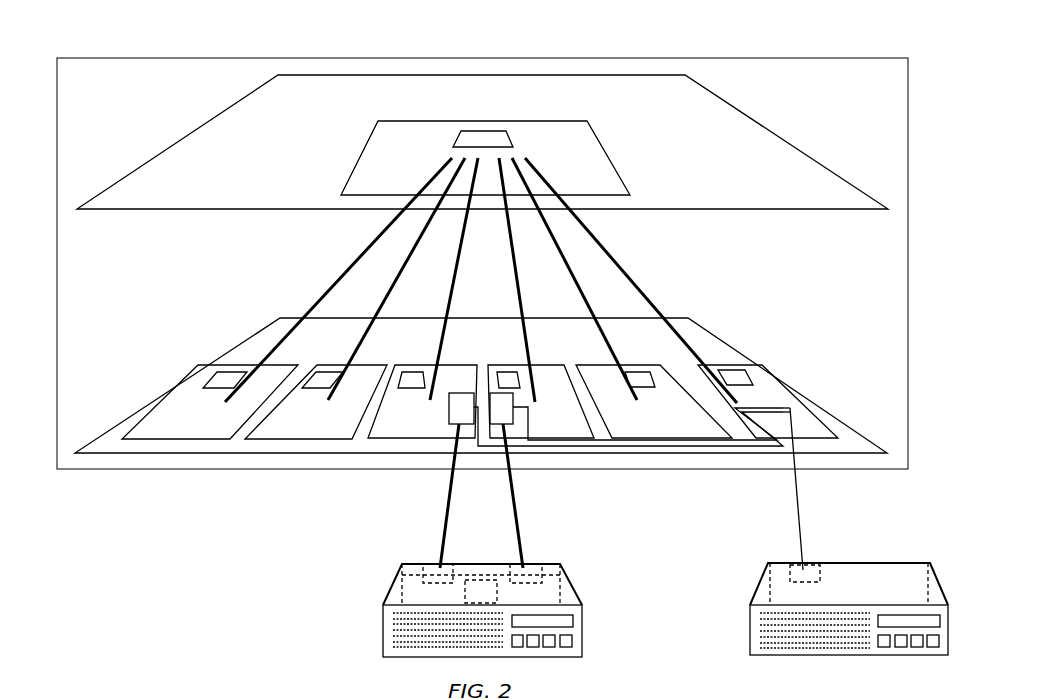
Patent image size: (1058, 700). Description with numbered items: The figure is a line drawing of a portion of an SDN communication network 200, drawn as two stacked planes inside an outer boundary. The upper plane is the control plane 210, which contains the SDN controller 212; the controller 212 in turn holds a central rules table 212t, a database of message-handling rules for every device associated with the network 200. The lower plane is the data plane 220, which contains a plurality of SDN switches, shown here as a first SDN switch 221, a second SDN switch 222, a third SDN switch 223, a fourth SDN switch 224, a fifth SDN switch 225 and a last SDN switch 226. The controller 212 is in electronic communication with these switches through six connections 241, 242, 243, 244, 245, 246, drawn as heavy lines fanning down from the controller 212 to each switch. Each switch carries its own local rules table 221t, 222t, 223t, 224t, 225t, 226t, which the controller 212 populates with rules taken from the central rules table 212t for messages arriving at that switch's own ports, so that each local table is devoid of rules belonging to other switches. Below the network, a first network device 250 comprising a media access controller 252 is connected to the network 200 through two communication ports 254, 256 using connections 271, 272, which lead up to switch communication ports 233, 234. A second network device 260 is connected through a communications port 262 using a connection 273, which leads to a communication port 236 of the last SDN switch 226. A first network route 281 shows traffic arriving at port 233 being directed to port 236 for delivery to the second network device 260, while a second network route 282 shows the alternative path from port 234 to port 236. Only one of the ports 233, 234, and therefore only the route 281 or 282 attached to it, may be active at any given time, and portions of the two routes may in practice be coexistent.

The SDN communication network 200 is at (160, 40).
The control plane 210 is at (648, 107).
The SDN controller 212 is at (574, 151).
The central rules table 212t is at (489, 129).
The data plane 220 is at (572, 350).
The first SDN switch 221 is at (209, 427).
The local rules table 221t is at (210, 382).
The second SDN switch 222 is at (321, 427).
The local rules table 222t is at (305, 377).
The third SDN switch 223 is at (426, 427).
The local rules table 223t is at (412, 373).
The fourth SDN switch 224 is at (580, 427).
The local rules table 224t is at (503, 372).
The fifth SDN switch 225 is at (663, 427).
The local rules table 225t is at (635, 375).
The last SDN switch 226 is at (756, 365).
The local rules table 226t is at (728, 367).
The communication port 233 is at (445, 440).
The communication port 234 is at (512, 440).
The communication port 236 is at (790, 408).
The connection 241 is at (334, 285).
The connection 242 is at (407, 262).
The connection 243 is at (464, 230).
The connection 244 is at (510, 232).
The connection 245 is at (565, 262).
The connection 246 is at (635, 285).
The first network device 250 is at (383, 628).
The media access controller 252 is at (474, 578).
The communication port 254 is at (402, 575).
The communication port 256 is at (563, 575).
The second network device 260 is at (750, 612).
The communications port 262 is at (822, 573).
The connection 271 is at (443, 520).
The connection 272 is at (520, 520).
The connection 273 is at (803, 498).
The first network route 281 is at (585, 447).
The second network route 282 is at (663, 443).